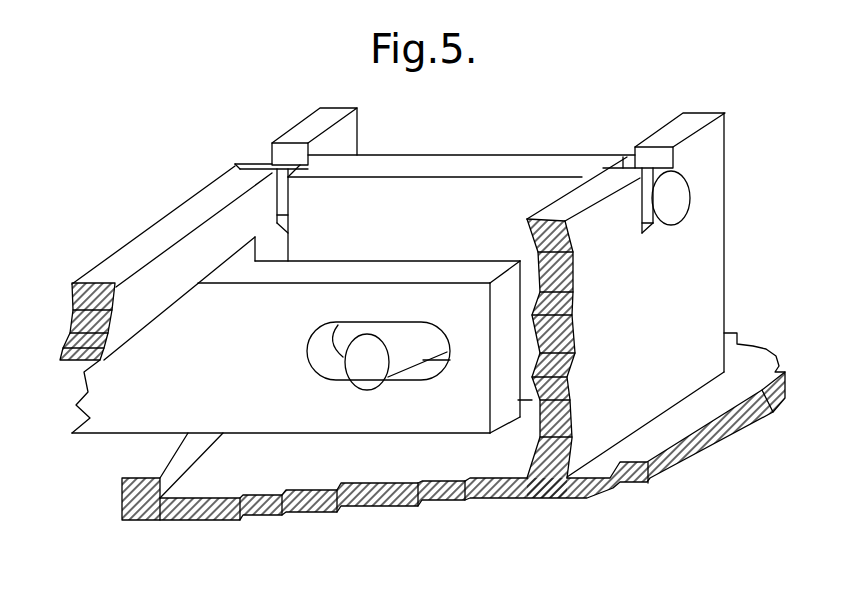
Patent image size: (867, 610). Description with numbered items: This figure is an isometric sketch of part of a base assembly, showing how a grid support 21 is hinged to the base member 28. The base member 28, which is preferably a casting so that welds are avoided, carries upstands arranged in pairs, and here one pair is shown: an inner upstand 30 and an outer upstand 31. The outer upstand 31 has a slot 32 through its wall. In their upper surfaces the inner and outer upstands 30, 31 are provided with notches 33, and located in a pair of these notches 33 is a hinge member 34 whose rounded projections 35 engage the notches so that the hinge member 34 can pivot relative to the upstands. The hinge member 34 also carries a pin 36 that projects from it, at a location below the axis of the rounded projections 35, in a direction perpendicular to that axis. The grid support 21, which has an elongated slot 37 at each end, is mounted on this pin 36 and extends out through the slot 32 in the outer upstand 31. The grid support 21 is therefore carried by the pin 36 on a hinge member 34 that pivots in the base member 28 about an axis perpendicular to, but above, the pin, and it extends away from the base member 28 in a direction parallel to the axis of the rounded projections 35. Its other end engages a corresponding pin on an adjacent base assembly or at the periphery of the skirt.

The grid support 21 is at (98, 412).
The base member 28 is at (393, 508).
The inner upstand 30 is at (697, 350).
The outer upstand 31 is at (352, 138).
The slot 32 is at (148, 475).
The notches 33 is at (647, 158).
The hinge member 34 is at (472, 175).
The rounded projections 35 is at (663, 208).
The pin 36 is at (363, 380).
The elongated slot 37 is at (303, 355).